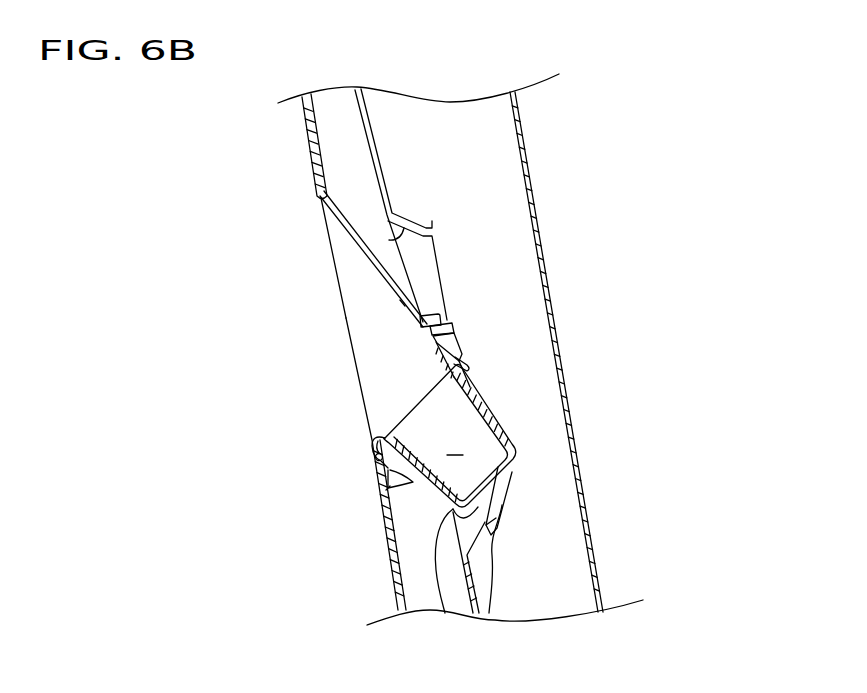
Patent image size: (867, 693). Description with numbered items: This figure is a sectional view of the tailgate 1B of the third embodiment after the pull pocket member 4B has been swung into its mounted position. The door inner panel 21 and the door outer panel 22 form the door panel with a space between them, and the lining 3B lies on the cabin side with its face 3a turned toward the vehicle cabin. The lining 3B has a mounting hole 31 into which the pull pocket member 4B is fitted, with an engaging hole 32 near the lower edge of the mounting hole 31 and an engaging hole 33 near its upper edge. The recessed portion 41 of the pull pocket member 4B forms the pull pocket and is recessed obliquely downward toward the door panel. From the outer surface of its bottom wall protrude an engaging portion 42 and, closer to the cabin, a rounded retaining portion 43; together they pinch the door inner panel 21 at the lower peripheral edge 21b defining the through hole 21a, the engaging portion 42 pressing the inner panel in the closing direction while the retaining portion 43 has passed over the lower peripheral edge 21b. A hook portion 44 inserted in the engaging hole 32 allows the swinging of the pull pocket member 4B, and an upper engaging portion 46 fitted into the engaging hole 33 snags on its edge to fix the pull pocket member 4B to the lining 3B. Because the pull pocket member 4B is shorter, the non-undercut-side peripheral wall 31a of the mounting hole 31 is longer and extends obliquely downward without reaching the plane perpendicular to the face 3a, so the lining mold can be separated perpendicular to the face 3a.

The tailgate 1B is at (607, 173).
The face of the lining 3a is at (310, 148).
The lining 3B is at (388, 577).
The door inner panel 21 is at (382, 187).
The through hole 21a is at (392, 238).
The lower peripheral edge 21b is at (489, 613).
The door outer panel 22 is at (546, 279).
The mounting hole 31 is at (372, 437).
The non-undercut-side peripheral wall 31a is at (403, 302).
The engaging hole 32 is at (389, 488).
The engaging hole 33 is at (428, 340).
The pull pocket member 4B is at (407, 393).
The recessed portion 41 is at (488, 410).
The engaging portion 42 is at (500, 510).
The retaining portion 43 is at (445, 613).
The hook portion 44 is at (387, 475).
The upper engaging portion 46 is at (458, 333).